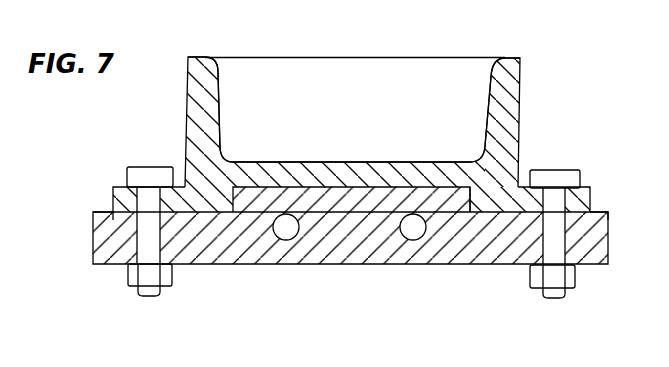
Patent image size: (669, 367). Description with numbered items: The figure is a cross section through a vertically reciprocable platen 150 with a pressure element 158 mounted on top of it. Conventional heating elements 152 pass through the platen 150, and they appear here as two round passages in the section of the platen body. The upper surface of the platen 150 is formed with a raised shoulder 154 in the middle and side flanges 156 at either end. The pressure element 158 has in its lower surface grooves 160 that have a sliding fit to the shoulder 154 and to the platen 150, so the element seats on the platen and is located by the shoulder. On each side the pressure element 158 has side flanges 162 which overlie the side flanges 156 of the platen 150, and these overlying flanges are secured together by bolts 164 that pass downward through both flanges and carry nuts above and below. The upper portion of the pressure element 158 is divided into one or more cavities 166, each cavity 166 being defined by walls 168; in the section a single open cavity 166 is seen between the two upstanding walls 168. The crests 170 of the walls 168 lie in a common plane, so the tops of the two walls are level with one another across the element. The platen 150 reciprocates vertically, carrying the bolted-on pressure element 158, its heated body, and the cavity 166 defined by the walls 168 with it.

The platen 150 is at (223, 265).
The heating elements 152 is at (288, 239).
The shoulder 154 is at (365, 162).
The side flanges 156 is at (95, 211).
The pressure element 158 is at (521, 113).
The grooves 160 is at (473, 198).
The side flanges 162 is at (113, 197).
The bolts 164 is at (137, 298).
The cavities 166 is at (355, 109).
The walls 168 is at (190, 57).
The crests 170 is at (518, 58).